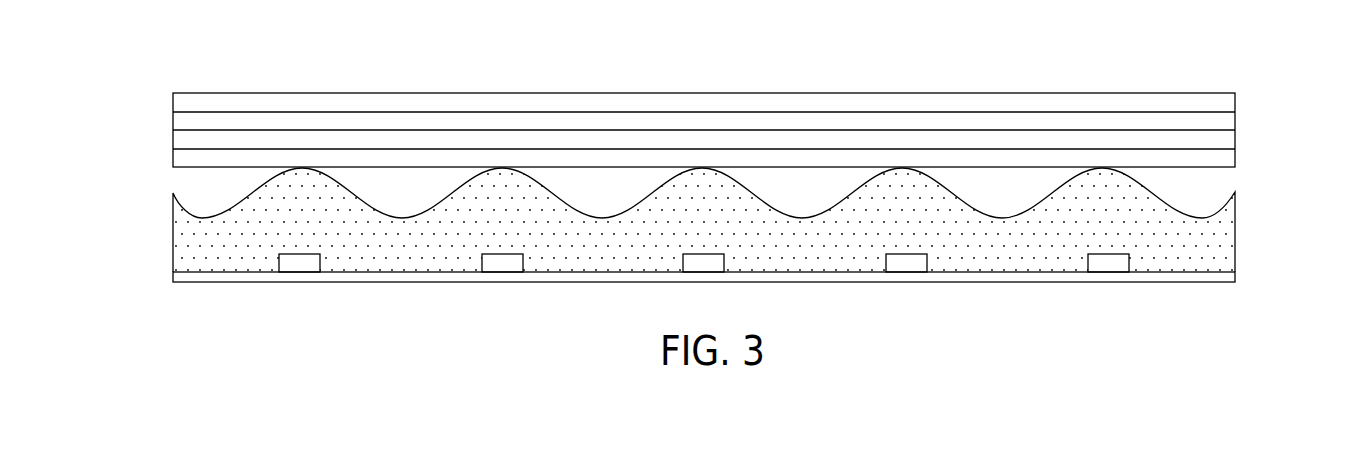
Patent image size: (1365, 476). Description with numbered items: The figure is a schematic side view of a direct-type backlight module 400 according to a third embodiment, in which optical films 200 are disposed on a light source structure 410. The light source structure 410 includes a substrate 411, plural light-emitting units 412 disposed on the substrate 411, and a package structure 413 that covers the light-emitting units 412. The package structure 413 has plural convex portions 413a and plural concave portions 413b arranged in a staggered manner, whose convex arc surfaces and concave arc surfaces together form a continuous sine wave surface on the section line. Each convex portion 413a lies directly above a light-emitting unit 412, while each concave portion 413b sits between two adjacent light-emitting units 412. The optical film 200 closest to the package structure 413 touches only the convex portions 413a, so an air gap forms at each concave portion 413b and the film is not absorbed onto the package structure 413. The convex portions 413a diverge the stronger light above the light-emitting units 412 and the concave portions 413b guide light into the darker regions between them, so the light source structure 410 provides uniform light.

The backlight module 400 is at (62, 67).
The optical films 200 is at (160, 93).
The light source structure 410 is at (138, 237).
The substrate 411 is at (376, 278).
The light-emitting units 412 is at (298, 263).
The package structure 413 is at (1220, 242).
The convex portion 413a is at (1107, 190).
The concave portion 413b is at (1199, 215).